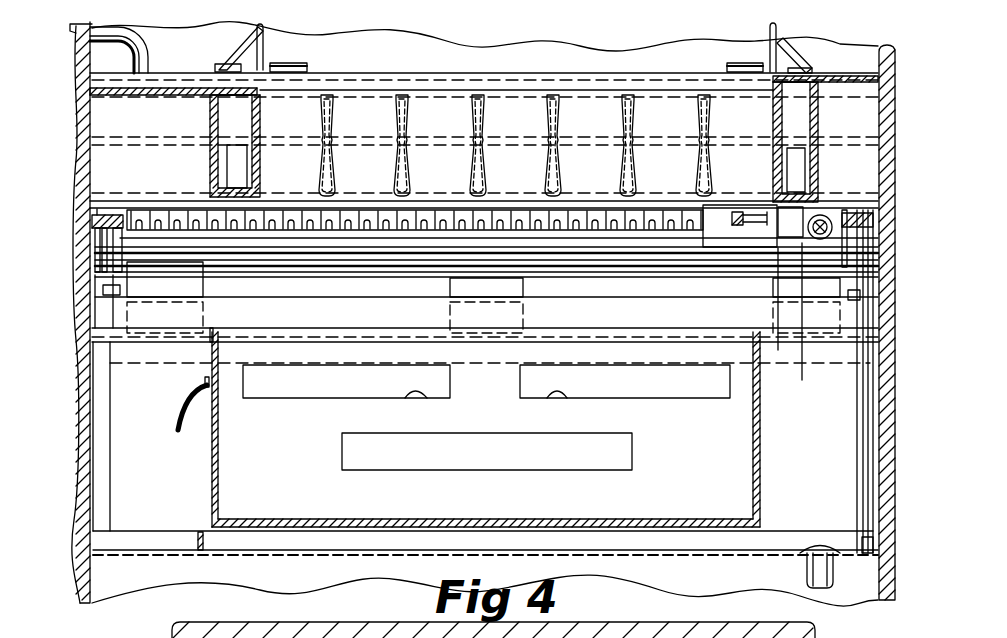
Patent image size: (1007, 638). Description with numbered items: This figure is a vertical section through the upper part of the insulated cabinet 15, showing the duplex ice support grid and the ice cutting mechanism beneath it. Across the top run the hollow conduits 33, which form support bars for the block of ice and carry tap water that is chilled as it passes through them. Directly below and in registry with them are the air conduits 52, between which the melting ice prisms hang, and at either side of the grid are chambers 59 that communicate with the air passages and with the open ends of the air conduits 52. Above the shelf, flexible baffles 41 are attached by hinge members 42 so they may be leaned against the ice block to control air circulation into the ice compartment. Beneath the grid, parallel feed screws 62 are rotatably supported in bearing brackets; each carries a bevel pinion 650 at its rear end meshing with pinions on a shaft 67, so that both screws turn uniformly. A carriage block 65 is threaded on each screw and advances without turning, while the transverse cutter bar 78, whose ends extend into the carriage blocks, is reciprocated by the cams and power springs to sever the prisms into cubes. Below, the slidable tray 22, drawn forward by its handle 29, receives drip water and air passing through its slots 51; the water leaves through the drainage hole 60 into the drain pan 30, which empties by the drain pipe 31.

The cabinet 15 is at (887, 96).
The tray 22 is at (210, 480).
The handle 29 is at (184, 402).
The drain pan 30 is at (748, 557).
The drain pipe 31 is at (834, 580).
The hollow conduits 33 is at (484, 114).
The baffles 41 is at (262, 41).
The hinge members 42 is at (216, 67).
The slots 51 is at (485, 468).
The air conduits 52 is at (624, 158).
The chambers 59 is at (227, 166).
The drainage hole 60 is at (733, 522).
The feed screws 62 is at (542, 231).
The carriage block 65 is at (722, 238).
The shaft 67 is at (829, 235).
The cutter bar 78 is at (742, 226).
The bevel pinion 650 is at (801, 307).